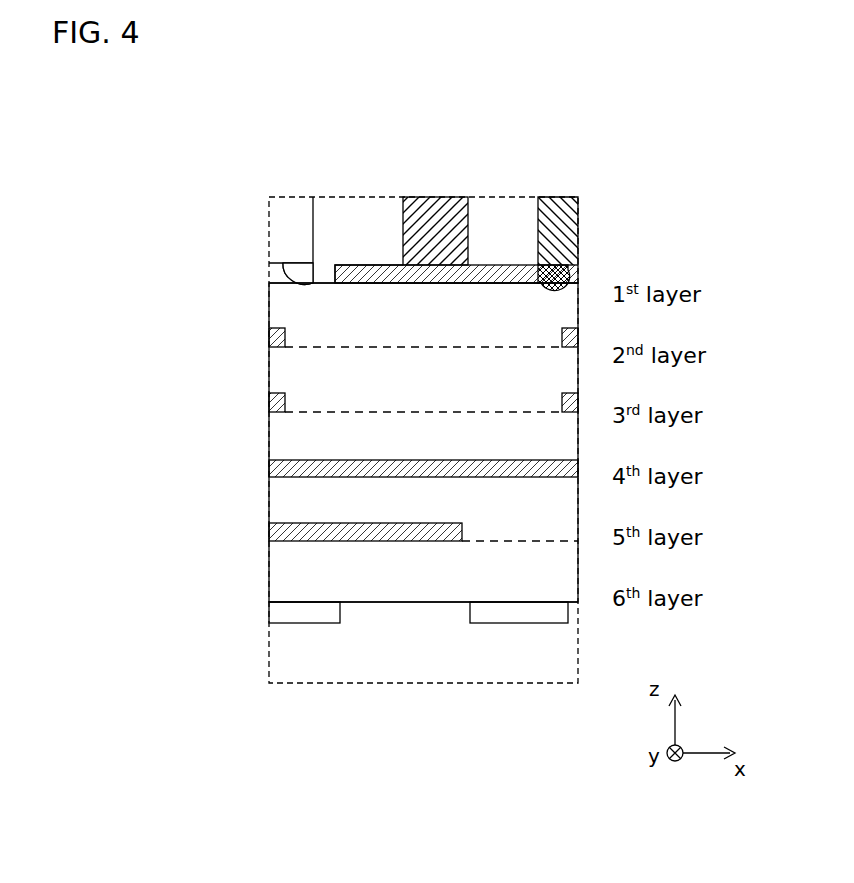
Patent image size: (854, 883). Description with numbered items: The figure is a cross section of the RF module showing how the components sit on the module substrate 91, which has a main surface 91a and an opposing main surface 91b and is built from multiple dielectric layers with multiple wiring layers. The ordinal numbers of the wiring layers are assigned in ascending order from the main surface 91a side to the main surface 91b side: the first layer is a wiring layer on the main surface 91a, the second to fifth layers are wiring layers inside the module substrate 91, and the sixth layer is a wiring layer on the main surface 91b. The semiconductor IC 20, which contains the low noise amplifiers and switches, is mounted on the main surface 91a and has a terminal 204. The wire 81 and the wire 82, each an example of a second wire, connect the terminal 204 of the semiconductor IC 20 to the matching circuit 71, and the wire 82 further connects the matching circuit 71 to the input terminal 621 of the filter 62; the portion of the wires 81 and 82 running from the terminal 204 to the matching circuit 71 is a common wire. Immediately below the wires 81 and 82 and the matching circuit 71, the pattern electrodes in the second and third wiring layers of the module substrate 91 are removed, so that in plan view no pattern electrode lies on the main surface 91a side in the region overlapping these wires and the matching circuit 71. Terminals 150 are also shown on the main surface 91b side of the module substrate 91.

The semiconductor integrated circuit 20 is at (286, 201).
The terminal 204 is at (289, 275).
The matching circuit 71 is at (440, 200).
The filter 62 is at (559, 200).
The input terminal 621 is at (576, 273).
The wire 81 is at (372, 264).
The wire 82 is at (515, 264).
The module substrate 91 is at (268, 434).
The main surface 91a is at (269, 283).
The main surface 91b is at (269, 602).
The terminal pad 150 is at (317, 625).